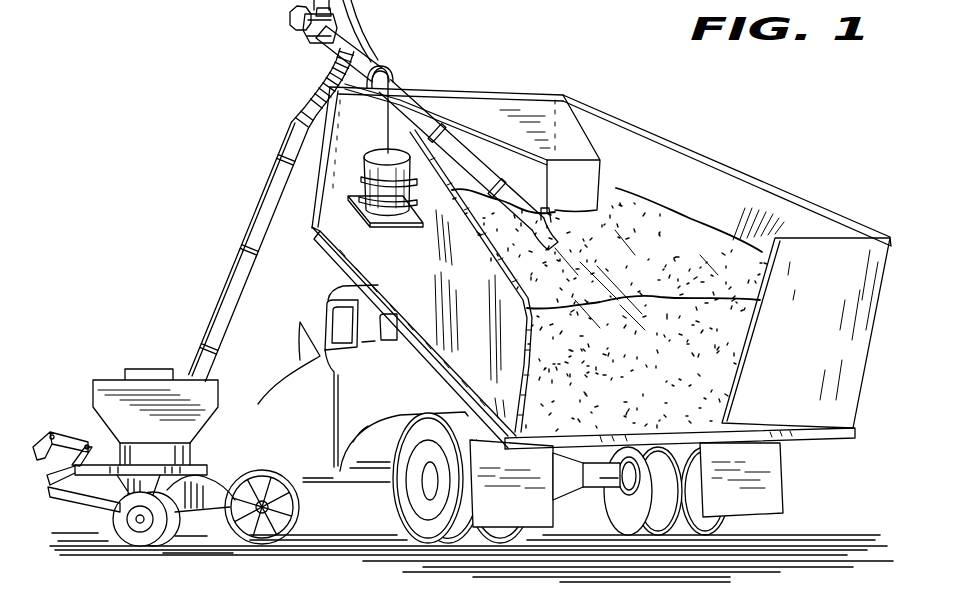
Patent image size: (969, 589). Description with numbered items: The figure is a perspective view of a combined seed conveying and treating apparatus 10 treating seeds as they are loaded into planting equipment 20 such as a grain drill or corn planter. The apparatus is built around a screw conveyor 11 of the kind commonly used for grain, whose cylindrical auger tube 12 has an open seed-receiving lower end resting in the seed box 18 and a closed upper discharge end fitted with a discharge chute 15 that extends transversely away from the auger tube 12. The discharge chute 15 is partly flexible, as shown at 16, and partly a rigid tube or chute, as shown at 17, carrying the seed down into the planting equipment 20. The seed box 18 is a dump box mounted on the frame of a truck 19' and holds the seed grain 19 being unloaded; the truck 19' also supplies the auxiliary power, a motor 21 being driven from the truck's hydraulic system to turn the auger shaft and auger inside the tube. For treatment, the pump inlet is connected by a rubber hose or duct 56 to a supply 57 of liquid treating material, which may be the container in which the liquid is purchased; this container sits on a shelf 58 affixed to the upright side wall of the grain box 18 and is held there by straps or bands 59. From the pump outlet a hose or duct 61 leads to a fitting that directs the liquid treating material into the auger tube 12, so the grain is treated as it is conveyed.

The combined seed conveying and treating apparatus 10 is at (395, 64).
The screw conveyor 11 is at (322, 57).
The auger tube 12 is at (497, 187).
The discharge chute 15 is at (258, 216).
The flexible portion of discharge chute 16 is at (303, 104).
The rigid tube or chute portion 17 is at (240, 308).
The seed box 18 is at (742, 188).
The seed grain 19 is at (629, 309).
The truck 19' is at (520, 414).
The planting equipment 20 is at (107, 377).
The motor 21 is at (289, 19).
The rubber hose or duct 56 is at (362, 13).
The supply of liquid treating material 57 is at (390, 227).
The shelf 58 is at (352, 199).
The straps or bands 59 is at (364, 157).
The hose or duct 61 is at (430, 92).